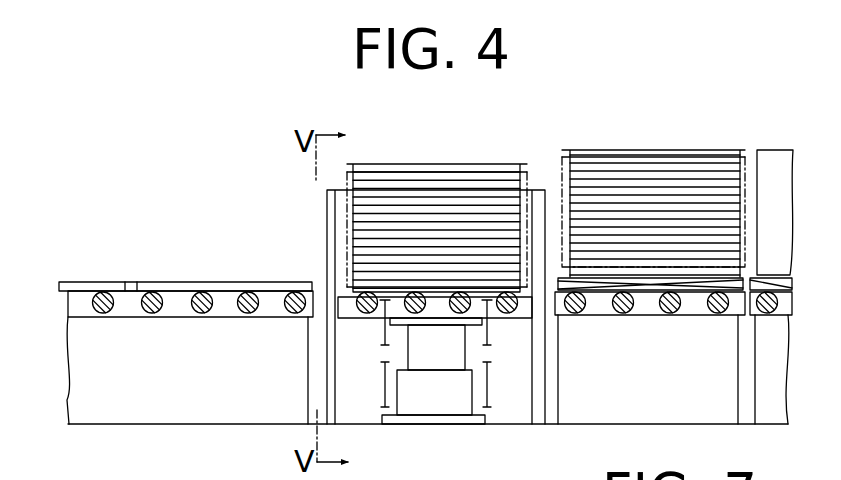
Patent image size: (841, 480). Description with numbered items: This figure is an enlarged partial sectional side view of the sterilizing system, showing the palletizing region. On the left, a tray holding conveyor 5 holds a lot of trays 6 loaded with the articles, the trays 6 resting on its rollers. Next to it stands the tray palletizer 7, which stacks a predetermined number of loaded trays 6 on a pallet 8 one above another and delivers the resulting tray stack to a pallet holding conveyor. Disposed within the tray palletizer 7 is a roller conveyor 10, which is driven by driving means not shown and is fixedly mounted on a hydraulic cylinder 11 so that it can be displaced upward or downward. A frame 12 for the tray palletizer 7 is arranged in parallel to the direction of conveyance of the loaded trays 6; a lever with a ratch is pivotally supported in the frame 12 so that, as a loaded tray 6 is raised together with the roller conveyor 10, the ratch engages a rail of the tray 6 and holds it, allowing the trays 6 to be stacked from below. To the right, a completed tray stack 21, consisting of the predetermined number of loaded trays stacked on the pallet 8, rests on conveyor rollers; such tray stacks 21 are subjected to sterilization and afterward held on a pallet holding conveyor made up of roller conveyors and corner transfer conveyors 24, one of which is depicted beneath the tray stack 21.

The tray holding conveyor 5 is at (100, 292).
The tray 6 is at (82, 282).
The tray palletizer 7 is at (326, 228).
The pallet 8 is at (561, 279).
The roller conveyor 10 is at (366, 313).
The hydraulic cylinder 11 is at (434, 406).
The frame 12 is at (535, 190).
The tray stack 21 is at (648, 146).
The corner transfer conveyor 24 is at (623, 311).